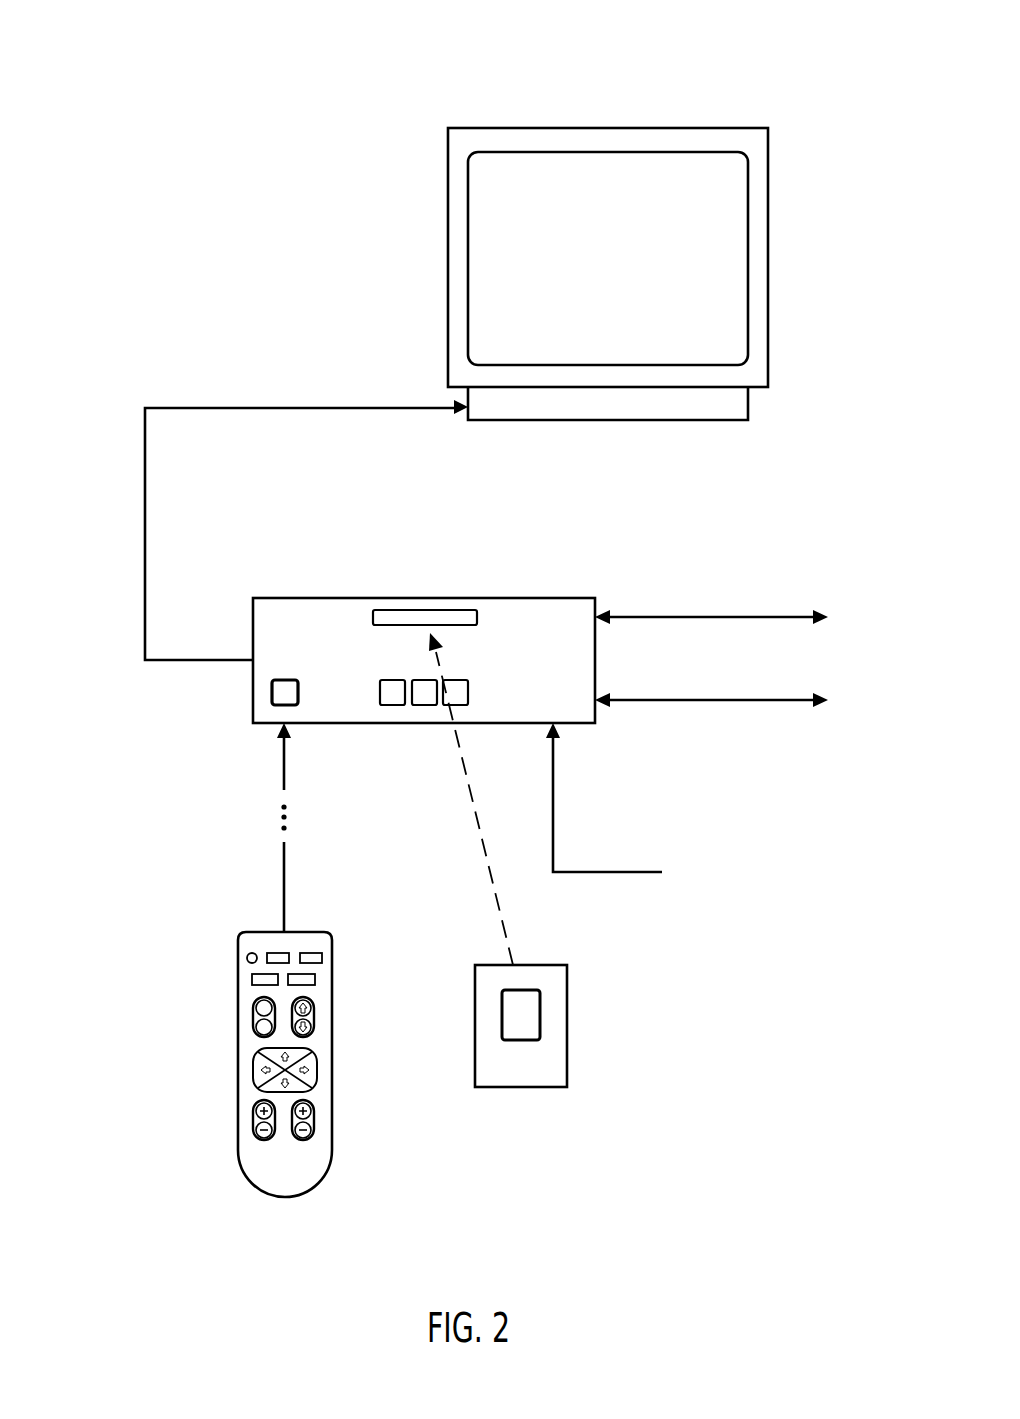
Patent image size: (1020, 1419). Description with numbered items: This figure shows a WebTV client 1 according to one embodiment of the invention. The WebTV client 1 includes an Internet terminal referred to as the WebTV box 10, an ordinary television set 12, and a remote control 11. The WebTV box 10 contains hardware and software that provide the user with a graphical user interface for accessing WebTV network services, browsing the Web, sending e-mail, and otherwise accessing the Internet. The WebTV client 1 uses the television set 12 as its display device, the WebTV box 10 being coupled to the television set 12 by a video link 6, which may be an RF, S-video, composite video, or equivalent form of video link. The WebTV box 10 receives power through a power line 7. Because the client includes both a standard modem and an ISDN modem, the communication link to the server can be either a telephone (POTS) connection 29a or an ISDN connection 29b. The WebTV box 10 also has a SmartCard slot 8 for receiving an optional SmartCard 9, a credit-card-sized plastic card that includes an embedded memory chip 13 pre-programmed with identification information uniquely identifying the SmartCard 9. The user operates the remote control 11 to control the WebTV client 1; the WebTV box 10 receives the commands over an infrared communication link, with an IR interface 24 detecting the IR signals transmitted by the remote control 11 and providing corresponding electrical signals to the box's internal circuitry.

The WebTV client 1 is at (748, 66).
The video link 6 is at (145, 510).
The power line 7 is at (623, 875).
The SmartCard slot 8 is at (431, 610).
The SmartCard 9 is at (548, 1063).
The WebTV box 10 is at (580, 713).
The remote control 11 is at (294, 1189).
The television set 12 is at (733, 346).
The memory chip 13 is at (530, 1018).
The IR interface 24 is at (298, 692).
The telephone (POTS) connection 29a is at (650, 615).
The ISDN connection 29b is at (650, 698).